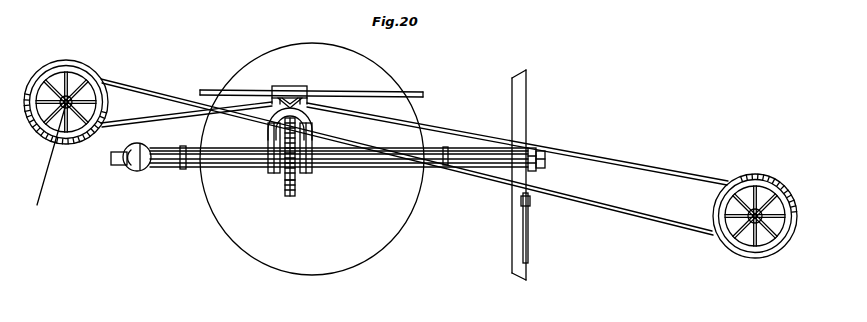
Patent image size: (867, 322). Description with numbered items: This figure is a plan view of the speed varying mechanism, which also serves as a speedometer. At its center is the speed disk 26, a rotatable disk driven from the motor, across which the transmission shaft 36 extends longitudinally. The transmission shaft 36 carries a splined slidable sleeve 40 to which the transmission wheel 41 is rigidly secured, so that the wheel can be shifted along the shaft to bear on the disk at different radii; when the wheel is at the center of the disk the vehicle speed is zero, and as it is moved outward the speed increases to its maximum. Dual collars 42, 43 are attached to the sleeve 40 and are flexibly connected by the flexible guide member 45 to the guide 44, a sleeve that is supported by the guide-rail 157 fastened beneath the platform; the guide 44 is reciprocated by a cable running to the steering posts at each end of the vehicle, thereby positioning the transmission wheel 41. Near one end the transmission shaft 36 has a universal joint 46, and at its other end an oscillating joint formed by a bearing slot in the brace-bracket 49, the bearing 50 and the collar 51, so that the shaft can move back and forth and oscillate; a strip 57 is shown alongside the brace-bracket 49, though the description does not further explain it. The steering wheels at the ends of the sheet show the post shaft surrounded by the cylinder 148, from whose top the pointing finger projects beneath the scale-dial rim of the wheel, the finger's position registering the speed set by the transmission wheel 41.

The speed disk 26 is at (312, 159).
The transmission shaft 36 is at (167, 160).
The splined slidable sleeve 40 is at (306, 163).
The transmission wheel 41 is at (288, 197).
The collar 42 is at (300, 172).
The collar 43 is at (278, 173).
The guide 44 is at (286, 92).
The flexible guide member 45 is at (307, 118).
The universal joint 46 is at (134, 170).
The brace-bracket 49 is at (517, 122).
The bearing 50 is at (535, 172).
The collar 51 is at (530, 174).
The strip 57 is at (527, 222).
The cylinder 148 is at (749, 223).
The guide-rail 157 is at (345, 95).